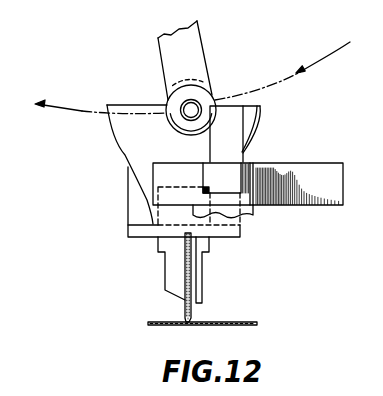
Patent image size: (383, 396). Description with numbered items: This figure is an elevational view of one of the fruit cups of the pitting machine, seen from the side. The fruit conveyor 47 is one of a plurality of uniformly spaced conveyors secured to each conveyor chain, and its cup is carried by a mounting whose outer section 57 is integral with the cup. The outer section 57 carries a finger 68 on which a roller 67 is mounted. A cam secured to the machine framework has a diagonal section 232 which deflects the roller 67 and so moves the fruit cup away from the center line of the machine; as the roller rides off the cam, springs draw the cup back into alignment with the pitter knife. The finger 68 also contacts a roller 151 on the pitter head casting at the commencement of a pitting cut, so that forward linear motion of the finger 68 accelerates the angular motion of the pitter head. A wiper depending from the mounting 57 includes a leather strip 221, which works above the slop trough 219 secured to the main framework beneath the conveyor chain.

The roller 151 is at (214, 96).
The fruit conveyor 47 is at (116, 154).
The finger 68 is at (233, 133).
The roller 67 is at (254, 167).
The diagonal section 232 is at (289, 211).
The outer section 57 is at (153, 224).
The leather strip 221 is at (185, 310).
The slop trough 219 is at (223, 322).